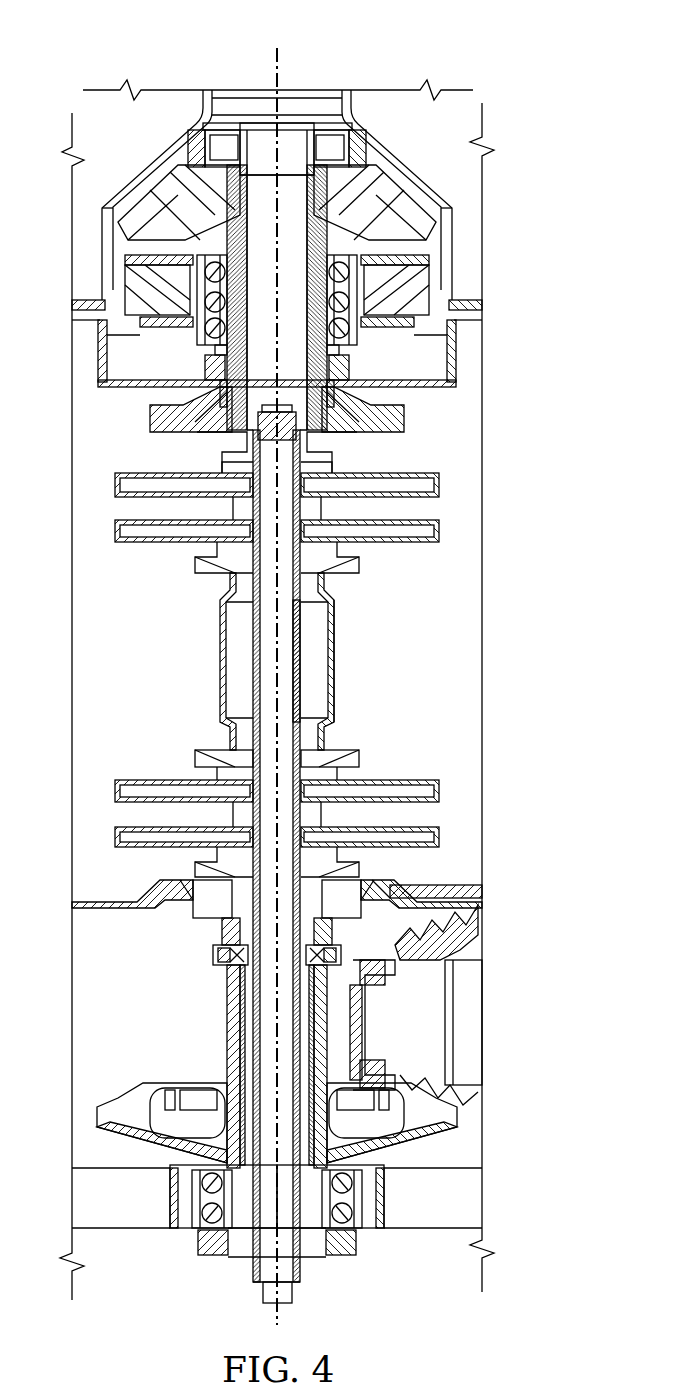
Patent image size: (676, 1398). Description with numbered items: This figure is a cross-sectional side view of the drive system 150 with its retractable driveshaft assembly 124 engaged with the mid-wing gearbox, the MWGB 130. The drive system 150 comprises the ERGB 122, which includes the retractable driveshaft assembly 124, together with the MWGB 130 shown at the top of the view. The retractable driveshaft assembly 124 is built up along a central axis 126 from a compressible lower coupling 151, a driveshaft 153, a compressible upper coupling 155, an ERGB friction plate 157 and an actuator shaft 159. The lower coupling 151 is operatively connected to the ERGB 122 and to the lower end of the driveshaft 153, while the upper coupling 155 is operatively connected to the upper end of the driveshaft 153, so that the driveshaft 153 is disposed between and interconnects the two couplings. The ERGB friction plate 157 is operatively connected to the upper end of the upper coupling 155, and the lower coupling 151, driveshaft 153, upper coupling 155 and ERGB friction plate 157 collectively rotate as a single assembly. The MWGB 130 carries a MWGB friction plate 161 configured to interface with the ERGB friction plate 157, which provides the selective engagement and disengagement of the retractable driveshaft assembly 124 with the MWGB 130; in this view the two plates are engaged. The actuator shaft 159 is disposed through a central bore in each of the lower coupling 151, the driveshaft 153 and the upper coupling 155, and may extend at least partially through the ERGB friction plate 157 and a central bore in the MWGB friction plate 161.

The drive system 150 is at (100, 60).
The rotational axis 126 is at (282, 72).
The MWGB 130 is at (140, 163).
The ERGB friction plate 157 is at (150, 423).
The MWGB friction plate 161 is at (405, 420).
The compressible upper coupling 155 is at (160, 545).
The compressible lower coupling 151 is at (148, 780).
The retractable driveshaft assembly 124 is at (210, 644).
The actuator shaft 159 is at (306, 655).
The driveshaft 153 is at (337, 667).
The ERGB 122 is at (472, 937).